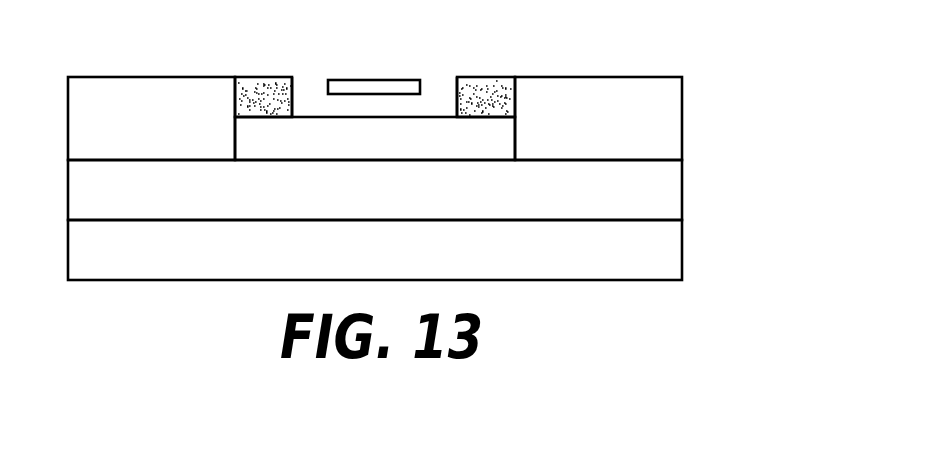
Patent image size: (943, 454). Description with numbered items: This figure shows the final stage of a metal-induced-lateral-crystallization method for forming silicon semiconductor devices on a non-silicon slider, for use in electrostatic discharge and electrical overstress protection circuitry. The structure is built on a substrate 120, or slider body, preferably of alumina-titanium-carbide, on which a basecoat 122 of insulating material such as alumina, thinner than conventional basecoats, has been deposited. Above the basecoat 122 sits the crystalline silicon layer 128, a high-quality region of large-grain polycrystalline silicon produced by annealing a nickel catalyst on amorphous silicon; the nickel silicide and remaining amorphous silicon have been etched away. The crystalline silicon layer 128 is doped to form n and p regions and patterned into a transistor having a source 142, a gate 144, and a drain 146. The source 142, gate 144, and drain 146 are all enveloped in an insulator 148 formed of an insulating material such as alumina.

The substrate 120 is at (636, 263).
The basecoat 122 is at (636, 203).
The crystalline silicon layer 128 is at (508, 145).
The source 142 is at (266, 91).
The gate 144 is at (385, 88).
The drain 146 is at (473, 88).
The insulator 148 is at (127, 128).